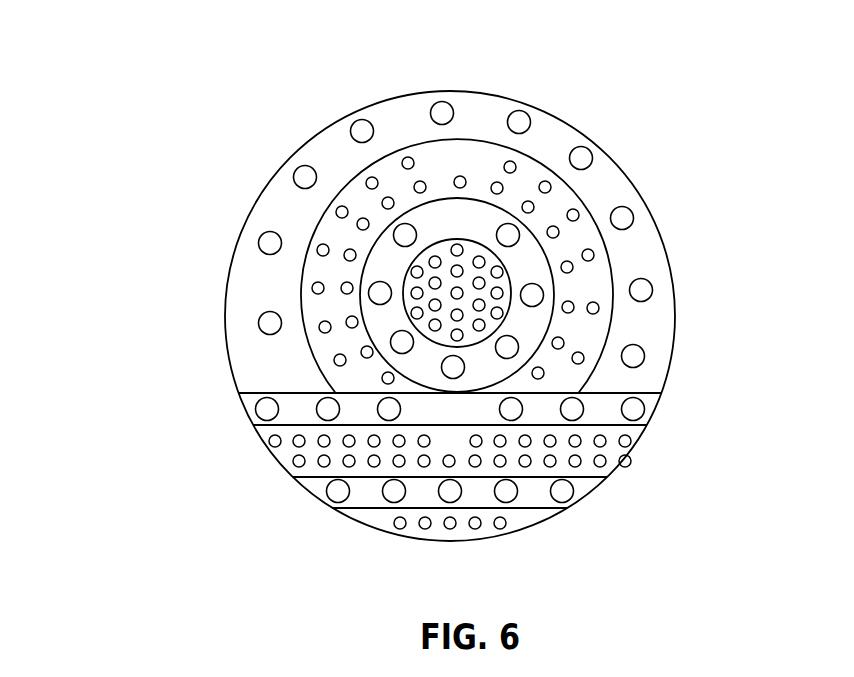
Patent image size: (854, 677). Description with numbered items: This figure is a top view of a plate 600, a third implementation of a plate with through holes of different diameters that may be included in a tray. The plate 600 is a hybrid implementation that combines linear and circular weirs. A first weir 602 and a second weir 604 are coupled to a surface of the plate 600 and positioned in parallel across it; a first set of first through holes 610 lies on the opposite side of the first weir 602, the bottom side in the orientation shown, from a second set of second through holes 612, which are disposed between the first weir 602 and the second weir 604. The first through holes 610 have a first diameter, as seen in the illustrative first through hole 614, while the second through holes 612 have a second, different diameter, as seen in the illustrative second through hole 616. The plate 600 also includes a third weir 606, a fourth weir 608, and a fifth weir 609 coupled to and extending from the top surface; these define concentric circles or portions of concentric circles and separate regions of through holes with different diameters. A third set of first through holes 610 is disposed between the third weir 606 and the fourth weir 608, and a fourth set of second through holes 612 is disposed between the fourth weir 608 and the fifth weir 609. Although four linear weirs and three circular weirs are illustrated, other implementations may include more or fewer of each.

The plate 600 is at (71, 36).
The first weir 602 is at (638, 425).
The second weir 604 is at (648, 393).
The third weir 606 is at (590, 213).
The fourth weir 608 is at (505, 204).
The fifth weir 609 is at (403, 267).
The first through holes 610 is at (474, 166).
The second through holes 612 is at (472, 232).
The first through hole 614 is at (403, 156).
The second through hole 616 is at (296, 167).